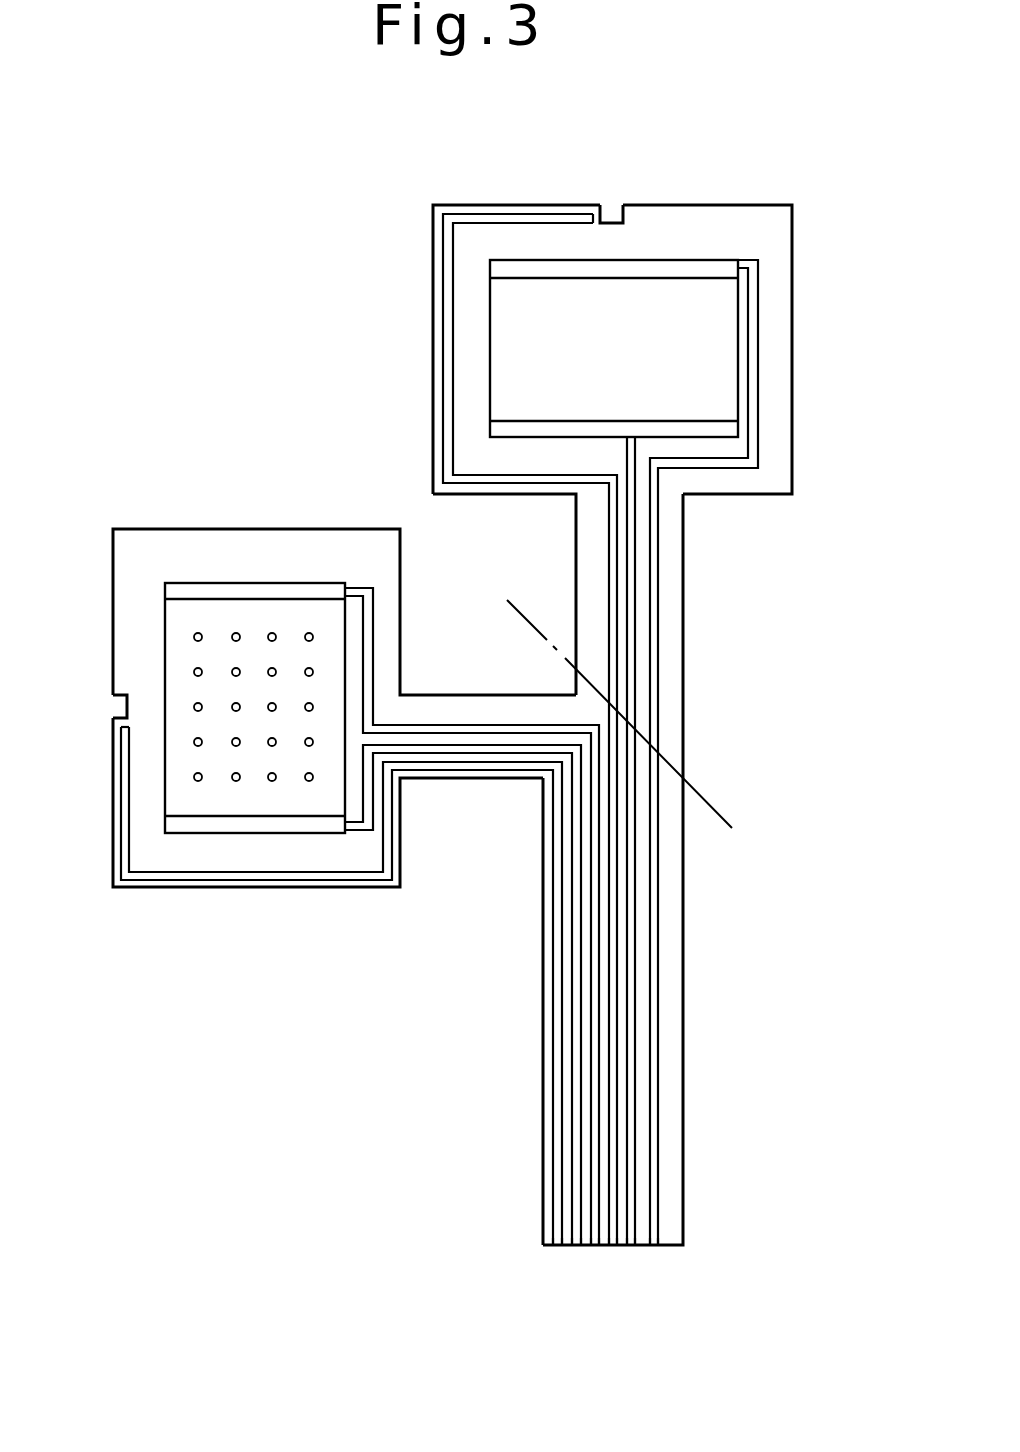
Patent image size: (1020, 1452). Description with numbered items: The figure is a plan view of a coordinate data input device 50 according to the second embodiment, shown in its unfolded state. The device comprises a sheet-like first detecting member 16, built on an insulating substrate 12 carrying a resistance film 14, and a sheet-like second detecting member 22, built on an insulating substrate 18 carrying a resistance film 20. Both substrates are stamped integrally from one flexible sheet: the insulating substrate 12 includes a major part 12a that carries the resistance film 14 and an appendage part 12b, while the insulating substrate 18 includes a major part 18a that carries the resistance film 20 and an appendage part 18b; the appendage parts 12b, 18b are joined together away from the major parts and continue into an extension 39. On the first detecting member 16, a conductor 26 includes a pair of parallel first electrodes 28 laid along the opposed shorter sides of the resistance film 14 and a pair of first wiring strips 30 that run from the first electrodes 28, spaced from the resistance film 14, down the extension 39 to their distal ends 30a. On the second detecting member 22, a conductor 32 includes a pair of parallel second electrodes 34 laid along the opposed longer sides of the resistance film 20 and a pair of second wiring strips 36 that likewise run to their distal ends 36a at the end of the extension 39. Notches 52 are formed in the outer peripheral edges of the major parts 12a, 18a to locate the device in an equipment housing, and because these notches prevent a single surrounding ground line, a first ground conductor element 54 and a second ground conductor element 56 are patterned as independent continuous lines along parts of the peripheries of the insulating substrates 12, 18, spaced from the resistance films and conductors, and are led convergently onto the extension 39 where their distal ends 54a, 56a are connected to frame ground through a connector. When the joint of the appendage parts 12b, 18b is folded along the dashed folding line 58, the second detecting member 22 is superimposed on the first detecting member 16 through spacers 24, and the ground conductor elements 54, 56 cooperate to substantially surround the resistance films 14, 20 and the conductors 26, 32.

The insulating substrate 12 is at (200, 548).
The major part 12a is at (147, 545).
The appendage part 12b is at (455, 718).
The resistance film 14 is at (175, 793).
The first detecting member 16 is at (478, 695).
The insulating substrate 18 is at (760, 225).
The major part 18a is at (660, 235).
The appendage part 18b is at (685, 650).
The resistance film 20 is at (505, 382).
The second detecting member 22 is at (722, 200).
The spacers 24 is at (194, 633).
The conductor 26 is at (430, 933).
The first electrodes 28 is at (285, 590).
The first wiring strips 30 is at (355, 596).
The distal ends of first wiring strips 30a is at (593, 1247).
The conductor 32 is at (822, 493).
The second electrodes 34 is at (712, 264).
The second wiring strips 36 is at (753, 348).
The distal ends of second wiring strips 36a is at (653, 1247).
The extension 39 is at (685, 1048).
The coordinate data input device 50 is at (320, 350).
The notches 52 is at (603, 207).
The first ground conductor element 54 is at (258, 876).
The distal end 54a is at (557, 1222).
The second ground conductor element 56 is at (449, 267).
The distal end 56a is at (611, 1247).
The folding line 58 is at (700, 790).